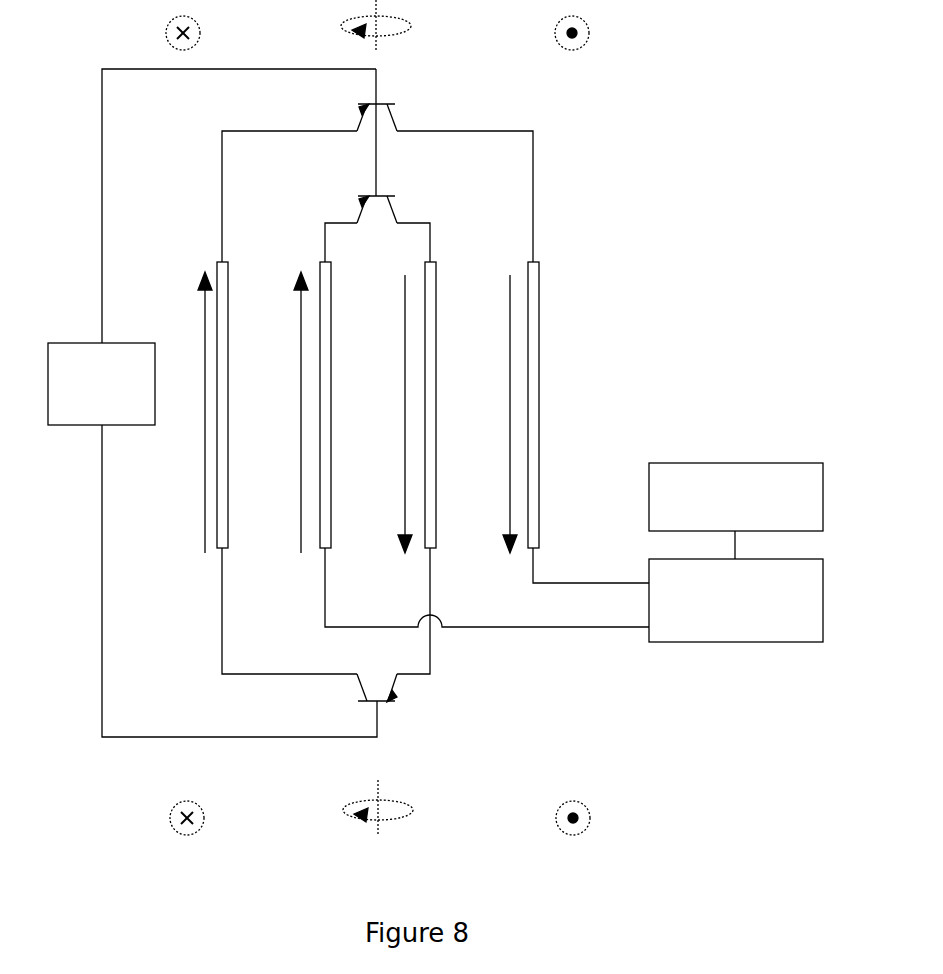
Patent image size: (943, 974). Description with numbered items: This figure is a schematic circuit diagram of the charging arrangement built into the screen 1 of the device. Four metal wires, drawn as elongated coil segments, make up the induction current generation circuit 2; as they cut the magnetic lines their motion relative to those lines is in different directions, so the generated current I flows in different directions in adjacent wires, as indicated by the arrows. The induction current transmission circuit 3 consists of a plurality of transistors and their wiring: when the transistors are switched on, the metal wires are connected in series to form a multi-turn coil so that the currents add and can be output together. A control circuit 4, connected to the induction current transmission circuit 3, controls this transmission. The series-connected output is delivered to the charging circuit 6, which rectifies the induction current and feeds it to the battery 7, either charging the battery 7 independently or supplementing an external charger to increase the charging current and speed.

The screen 1 is at (317, 395).
The induction current generation circuit 2 is at (560, 458).
The induction current transmission circuit 3 is at (523, 703).
The control circuit 4 is at (101, 384).
The charging circuit 6 is at (736, 600).
The battery 7 is at (736, 511).